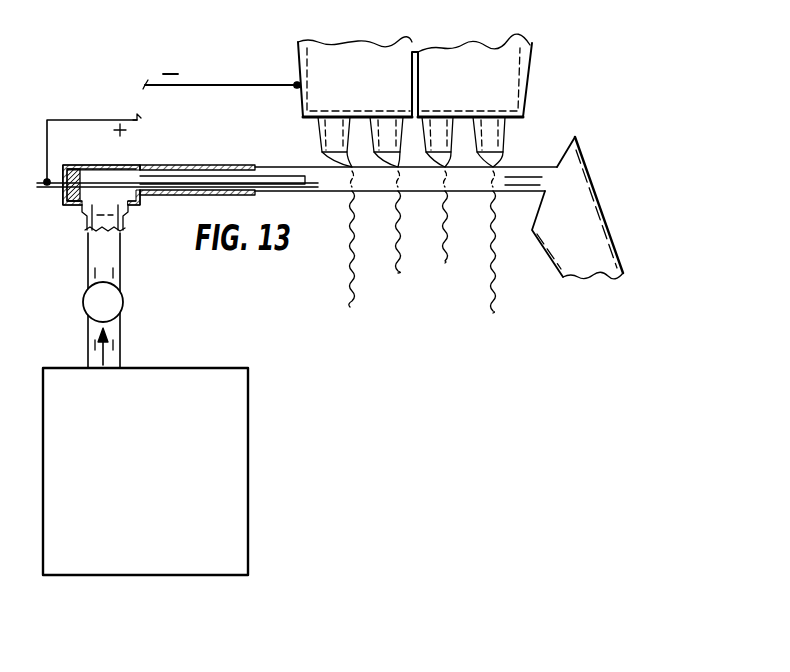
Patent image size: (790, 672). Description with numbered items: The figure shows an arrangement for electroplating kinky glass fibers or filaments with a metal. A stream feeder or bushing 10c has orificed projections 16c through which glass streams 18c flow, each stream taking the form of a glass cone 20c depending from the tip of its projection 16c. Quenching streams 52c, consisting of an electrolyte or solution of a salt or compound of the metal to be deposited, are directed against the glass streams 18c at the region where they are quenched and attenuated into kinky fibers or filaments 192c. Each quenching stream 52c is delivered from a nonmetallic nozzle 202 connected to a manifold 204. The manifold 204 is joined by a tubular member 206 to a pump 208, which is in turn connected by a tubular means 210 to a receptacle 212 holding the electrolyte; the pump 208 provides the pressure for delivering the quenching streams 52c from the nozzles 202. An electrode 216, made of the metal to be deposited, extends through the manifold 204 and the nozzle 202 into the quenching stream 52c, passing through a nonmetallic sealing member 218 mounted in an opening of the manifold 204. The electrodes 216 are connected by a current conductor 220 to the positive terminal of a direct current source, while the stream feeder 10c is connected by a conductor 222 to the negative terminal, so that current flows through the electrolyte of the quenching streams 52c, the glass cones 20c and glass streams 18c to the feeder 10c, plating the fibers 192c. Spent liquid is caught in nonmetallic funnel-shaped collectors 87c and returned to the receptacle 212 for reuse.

The stream feeder 10c is at (298, 56).
The orificed projections 16c is at (320, 126).
The glass cones 20c is at (342, 160).
The glass streams 18c is at (504, 168).
The funnel-shaped collectors 87c is at (584, 153).
The kinky fibers or filaments 192c is at (443, 238).
The nozzle 202 is at (190, 166).
The quenching stream 52c is at (294, 194).
The manifold 204 is at (122, 165).
The sealing member 218 is at (66, 170).
The electrode 216 is at (40, 187).
The current conductor 220 is at (62, 120).
The conductor 222 is at (257, 84).
The tubular member 206 is at (126, 222).
The tubular means 210 is at (122, 338).
The pump 208 is at (123, 300).
The receptacle 212 is at (250, 455).